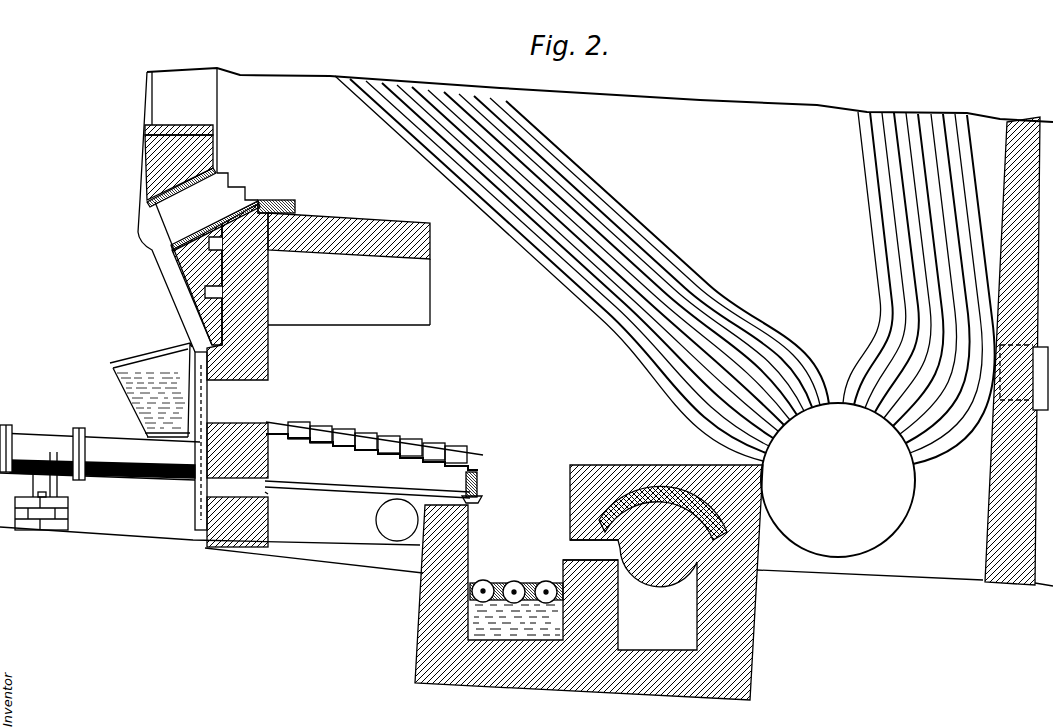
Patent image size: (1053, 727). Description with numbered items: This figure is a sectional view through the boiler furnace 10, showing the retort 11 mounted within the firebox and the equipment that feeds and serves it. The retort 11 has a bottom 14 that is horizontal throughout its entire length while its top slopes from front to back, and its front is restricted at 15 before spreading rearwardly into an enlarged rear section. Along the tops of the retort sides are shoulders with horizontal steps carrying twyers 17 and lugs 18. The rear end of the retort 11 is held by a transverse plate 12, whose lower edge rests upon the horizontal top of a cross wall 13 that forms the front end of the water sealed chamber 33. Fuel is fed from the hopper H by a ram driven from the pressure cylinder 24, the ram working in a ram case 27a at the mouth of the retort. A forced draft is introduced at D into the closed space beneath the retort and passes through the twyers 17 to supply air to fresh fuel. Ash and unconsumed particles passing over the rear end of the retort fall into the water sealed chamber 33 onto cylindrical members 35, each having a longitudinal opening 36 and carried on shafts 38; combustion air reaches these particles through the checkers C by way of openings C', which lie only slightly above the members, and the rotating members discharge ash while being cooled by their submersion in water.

The boiler furnace 10 is at (147, 156).
The retort 11 is at (367, 480).
The plate 12 is at (480, 482).
The cross wall 13 is at (483, 518).
The bottom of the retort 14 is at (478, 500).
The restricted portion 15 is at (276, 483).
The twyer 17 is at (384, 447).
The lug 18 is at (321, 436).
The pressure cylinder 24 is at (43, 432).
The ram case 27a is at (131, 462).
The water sealed chamber 33 is at (509, 627).
The cylindrical member 35 is at (509, 583).
The longitudinal opening 36 is at (552, 583).
The shaft 38 is at (478, 582).
The hopper H is at (137, 397).
The checkers C is at (663, 521).
The opening C' is at (579, 543).
The forced draft D is at (387, 533).